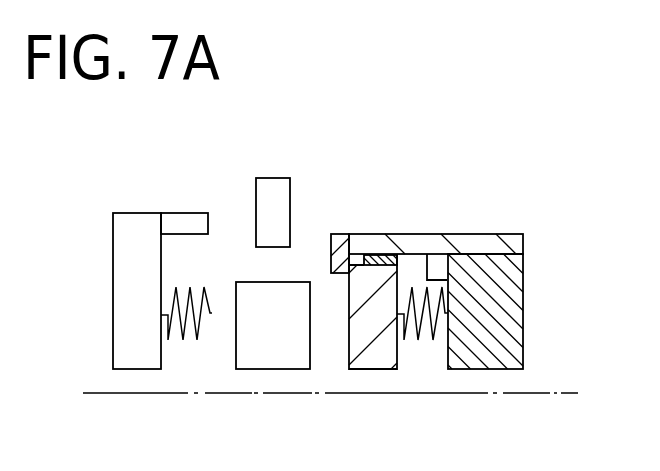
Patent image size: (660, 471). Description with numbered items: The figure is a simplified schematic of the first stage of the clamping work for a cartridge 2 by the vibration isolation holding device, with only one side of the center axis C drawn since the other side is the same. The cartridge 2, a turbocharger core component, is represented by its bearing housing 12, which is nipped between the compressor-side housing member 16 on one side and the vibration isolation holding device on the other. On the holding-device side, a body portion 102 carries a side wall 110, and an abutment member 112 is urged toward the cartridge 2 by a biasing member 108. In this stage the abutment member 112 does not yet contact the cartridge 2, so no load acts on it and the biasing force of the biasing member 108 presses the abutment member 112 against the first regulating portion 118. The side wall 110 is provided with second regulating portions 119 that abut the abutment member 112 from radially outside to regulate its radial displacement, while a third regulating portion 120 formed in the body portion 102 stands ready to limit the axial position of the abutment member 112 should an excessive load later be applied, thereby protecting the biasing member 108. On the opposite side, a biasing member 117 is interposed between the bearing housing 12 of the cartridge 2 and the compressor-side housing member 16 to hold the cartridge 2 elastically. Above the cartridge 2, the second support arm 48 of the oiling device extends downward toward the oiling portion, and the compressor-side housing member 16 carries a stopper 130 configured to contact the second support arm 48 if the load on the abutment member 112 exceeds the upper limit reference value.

The cartridge 2 is at (273, 366).
The bearing housing 12 is at (275, 369).
The compressor-side housing member 16 is at (131, 369).
The second support arm 48 is at (272, 178).
The body portion 102 is at (523, 272).
The biasing member 108 is at (433, 338).
The side wall 110 is at (500, 234).
The abutment member 112 is at (374, 370).
The biasing member 117 is at (168, 336).
The first regulating portion 118 is at (333, 234).
The second regulating portion 119 is at (378, 255).
The third regulating portion 120 is at (437, 268).
The stopper 130 is at (183, 213).
The center axis C is at (553, 393).